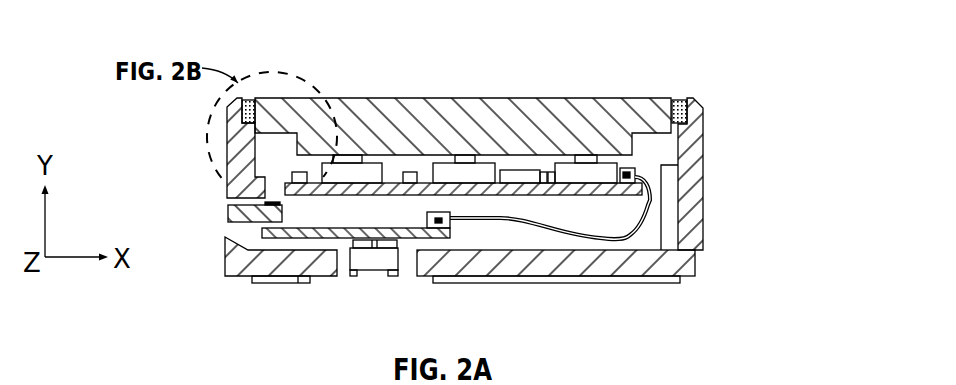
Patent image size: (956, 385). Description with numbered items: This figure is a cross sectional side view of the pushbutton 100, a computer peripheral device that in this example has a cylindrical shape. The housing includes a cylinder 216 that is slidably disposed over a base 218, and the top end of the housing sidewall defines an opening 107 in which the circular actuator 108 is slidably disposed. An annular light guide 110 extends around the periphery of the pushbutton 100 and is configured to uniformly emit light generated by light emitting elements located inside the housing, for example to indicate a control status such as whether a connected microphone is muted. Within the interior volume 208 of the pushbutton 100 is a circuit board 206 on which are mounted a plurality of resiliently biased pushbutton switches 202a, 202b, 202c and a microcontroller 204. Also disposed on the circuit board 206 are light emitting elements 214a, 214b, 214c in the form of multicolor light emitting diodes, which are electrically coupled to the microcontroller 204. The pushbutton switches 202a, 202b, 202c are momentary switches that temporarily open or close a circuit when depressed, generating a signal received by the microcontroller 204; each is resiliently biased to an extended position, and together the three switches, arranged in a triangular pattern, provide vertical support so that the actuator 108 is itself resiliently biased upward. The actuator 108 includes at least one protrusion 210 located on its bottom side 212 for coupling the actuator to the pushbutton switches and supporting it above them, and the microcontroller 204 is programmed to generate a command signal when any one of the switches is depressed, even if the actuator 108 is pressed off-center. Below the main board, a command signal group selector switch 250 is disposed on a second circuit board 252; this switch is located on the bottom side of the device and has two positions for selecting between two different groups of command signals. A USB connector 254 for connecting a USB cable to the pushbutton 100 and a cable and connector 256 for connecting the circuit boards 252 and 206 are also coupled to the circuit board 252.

The pushbutton 100 is at (795, 40).
The opening 107 is at (283, 60).
The actuator 108 is at (293, 108).
The light guide 110 is at (685, 83).
The pushbutton switch 202a is at (348, 170).
The pushbutton switch 202b is at (515, 176).
The pushbutton switch 202c is at (625, 148).
The microcontroller 204 is at (550, 175).
The circuit board 206 is at (463, 173).
The interior volume 208 is at (633, 206).
The protrusion 210 is at (675, 128).
The bottom side of the actuator 212 is at (273, 140).
The light emitting element 214a is at (288, 176).
The light emitting element 214b is at (410, 170).
The light emitting element 214c is at (603, 168).
The cylinder 216 is at (705, 158).
The base 218 is at (698, 263).
The command signal group selector switch 250 is at (362, 292).
The circuit board 252 is at (333, 229).
The USB connector 254 is at (233, 215).
The cable and connector 256 is at (528, 218).